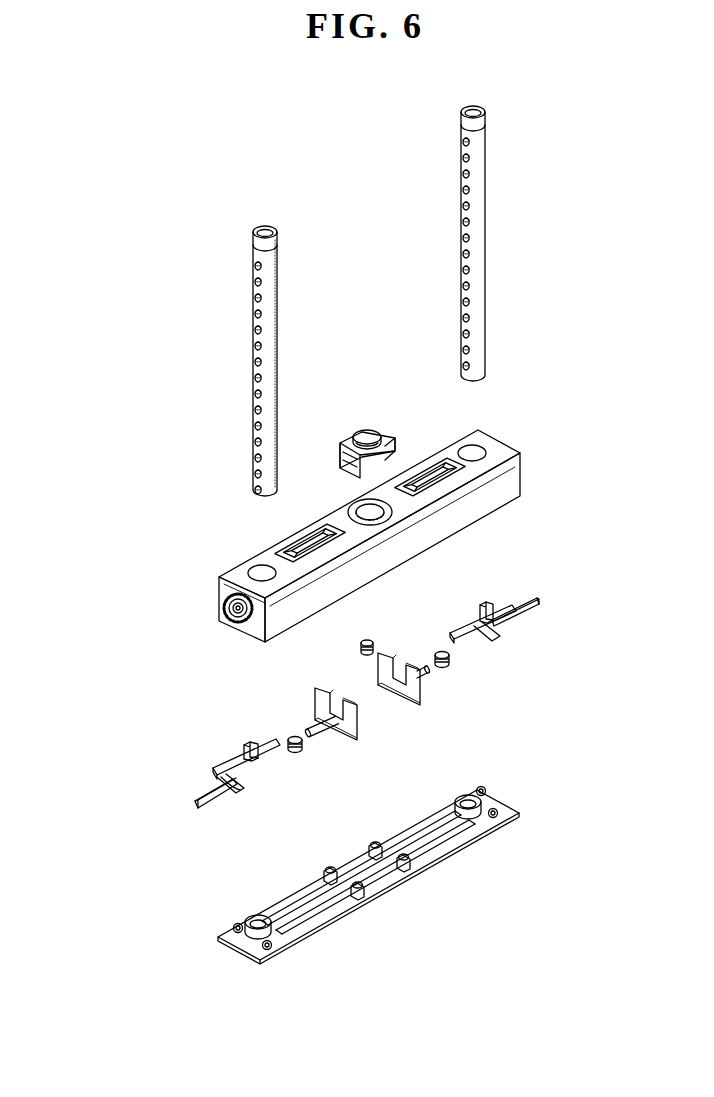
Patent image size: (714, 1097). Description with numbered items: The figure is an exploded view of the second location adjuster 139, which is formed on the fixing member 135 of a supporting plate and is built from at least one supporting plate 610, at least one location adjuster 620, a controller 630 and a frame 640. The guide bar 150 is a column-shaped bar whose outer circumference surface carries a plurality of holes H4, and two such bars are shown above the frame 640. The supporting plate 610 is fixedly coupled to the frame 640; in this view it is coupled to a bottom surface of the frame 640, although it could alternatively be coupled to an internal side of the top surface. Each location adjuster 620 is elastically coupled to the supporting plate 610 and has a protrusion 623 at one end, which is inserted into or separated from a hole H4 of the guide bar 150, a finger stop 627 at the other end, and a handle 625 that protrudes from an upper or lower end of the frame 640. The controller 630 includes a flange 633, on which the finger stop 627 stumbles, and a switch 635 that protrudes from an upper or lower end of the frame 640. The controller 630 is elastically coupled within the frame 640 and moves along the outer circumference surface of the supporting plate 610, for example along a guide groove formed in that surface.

The second location adjuster 139 is at (553, 498).
The guide bar 150 is at (482, 247).
The hole H4 is at (232, 357).
The fixing member 135 is at (419, 435).
The frame 640 is at (500, 440).
The controller 630 is at (388, 372).
The flange 633 is at (338, 453).
The switch 635 is at (367, 428).
The supporting plate 610 is at (312, 700).
The location adjuster 620 is at (88, 697).
The finger stop 627 is at (277, 738).
The handle 625 is at (247, 747).
The protrusion 623 is at (200, 800).